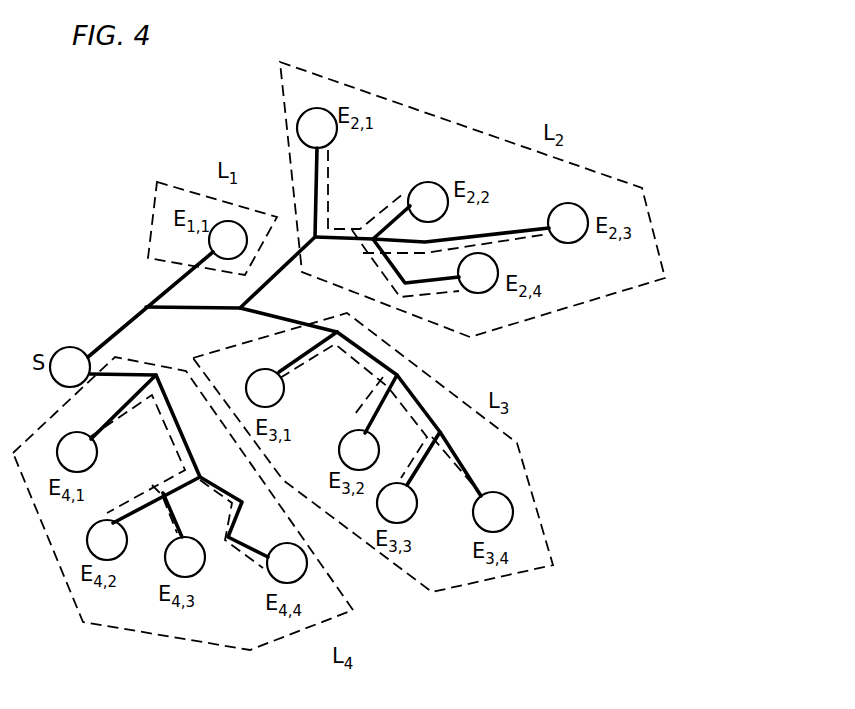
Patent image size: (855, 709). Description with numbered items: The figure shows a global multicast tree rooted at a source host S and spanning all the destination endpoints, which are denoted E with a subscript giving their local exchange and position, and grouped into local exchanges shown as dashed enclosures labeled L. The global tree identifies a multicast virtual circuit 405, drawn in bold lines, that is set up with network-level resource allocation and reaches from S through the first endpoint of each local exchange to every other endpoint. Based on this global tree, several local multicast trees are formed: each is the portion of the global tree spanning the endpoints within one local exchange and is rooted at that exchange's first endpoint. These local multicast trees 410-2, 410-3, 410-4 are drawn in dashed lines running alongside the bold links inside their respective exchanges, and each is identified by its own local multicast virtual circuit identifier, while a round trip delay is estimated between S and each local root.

The multicast virtual circuit 405 is at (130, 317).
The local multicast tree 410-2 is at (330, 180).
The local multicast tree 410-3 is at (325, 353).
The local multicast tree 410-4 is at (123, 415).